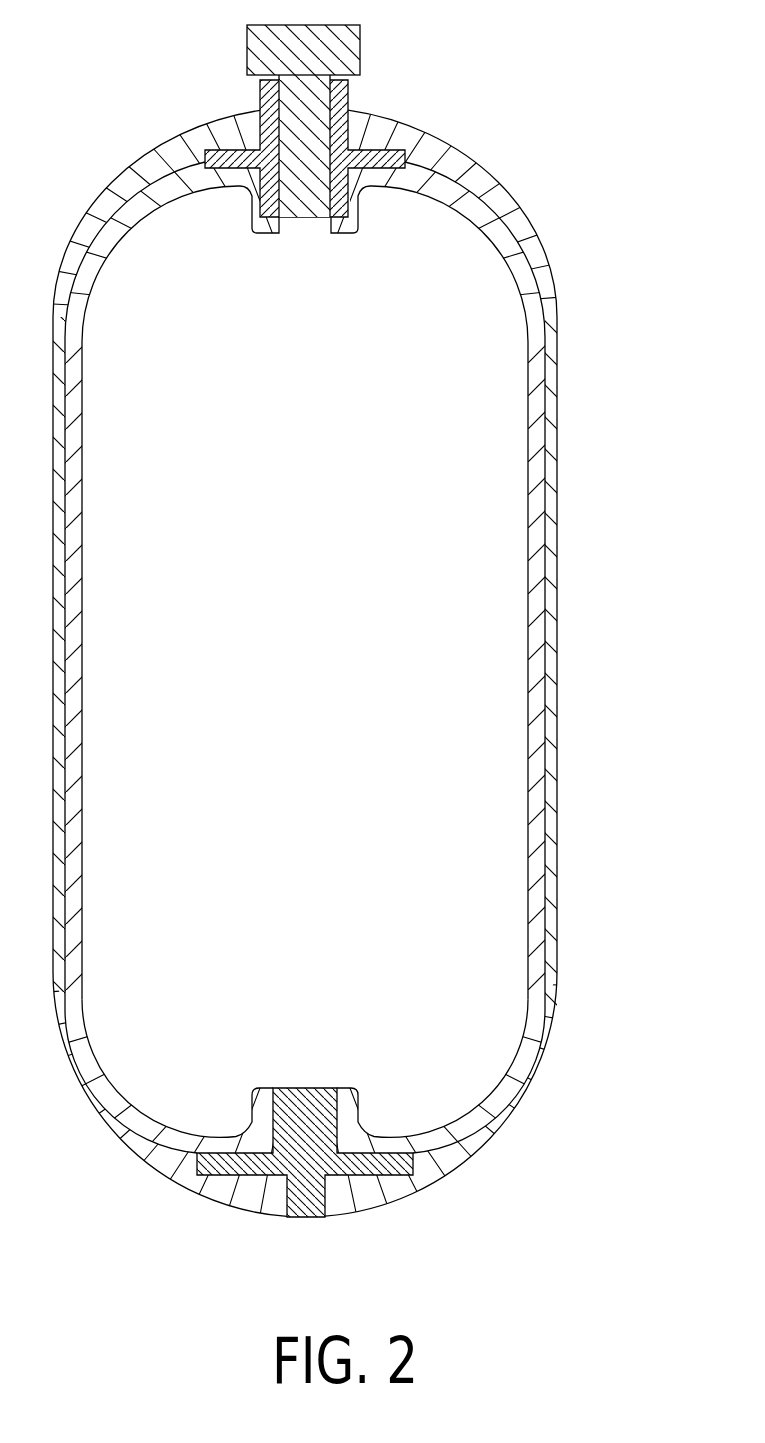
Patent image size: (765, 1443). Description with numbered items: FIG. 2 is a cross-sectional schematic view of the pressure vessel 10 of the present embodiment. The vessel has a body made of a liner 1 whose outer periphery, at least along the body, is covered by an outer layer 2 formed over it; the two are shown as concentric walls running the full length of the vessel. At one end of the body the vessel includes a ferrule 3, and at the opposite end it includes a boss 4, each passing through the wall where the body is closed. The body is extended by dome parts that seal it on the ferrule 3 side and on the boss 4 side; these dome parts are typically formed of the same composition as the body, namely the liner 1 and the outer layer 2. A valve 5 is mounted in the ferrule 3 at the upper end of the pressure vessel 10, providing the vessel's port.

The liner 1 is at (537, 593).
The outer layer 2 is at (553, 632).
The ferrule 3 is at (372, 156).
The boss 4 is at (300, 1218).
The valve 5 is at (347, 36).
The high-pressure tank 10 is at (339, 644).